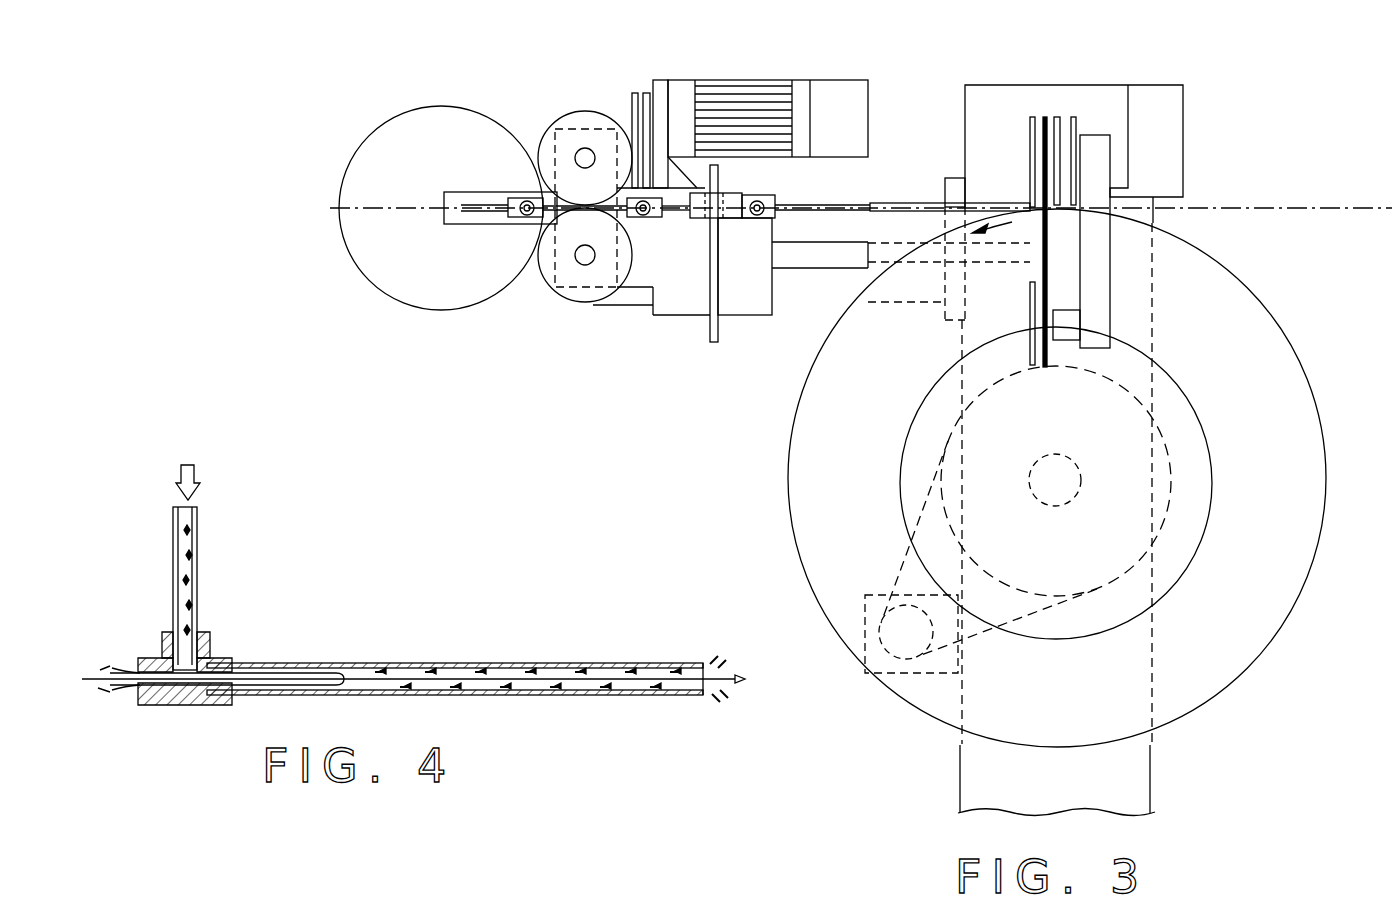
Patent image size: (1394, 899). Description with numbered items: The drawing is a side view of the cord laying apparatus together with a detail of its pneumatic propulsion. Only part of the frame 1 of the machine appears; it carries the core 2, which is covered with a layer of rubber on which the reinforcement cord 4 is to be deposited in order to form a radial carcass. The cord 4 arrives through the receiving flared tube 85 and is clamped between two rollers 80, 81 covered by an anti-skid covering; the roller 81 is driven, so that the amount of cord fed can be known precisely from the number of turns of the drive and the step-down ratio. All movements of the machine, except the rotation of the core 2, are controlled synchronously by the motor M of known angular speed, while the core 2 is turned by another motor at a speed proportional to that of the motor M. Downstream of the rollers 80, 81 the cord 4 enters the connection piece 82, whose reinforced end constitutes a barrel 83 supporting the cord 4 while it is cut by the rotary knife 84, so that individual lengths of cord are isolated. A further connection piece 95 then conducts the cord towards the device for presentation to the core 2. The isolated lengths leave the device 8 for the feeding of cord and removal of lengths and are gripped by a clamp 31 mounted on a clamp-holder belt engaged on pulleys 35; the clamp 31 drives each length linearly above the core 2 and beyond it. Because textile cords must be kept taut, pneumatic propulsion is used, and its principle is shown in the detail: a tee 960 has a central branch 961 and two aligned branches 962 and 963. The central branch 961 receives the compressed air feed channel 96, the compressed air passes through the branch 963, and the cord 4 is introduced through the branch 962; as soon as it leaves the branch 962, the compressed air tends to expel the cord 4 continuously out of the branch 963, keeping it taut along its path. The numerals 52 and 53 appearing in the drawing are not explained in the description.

In FIG. 3, the frame 1 is at (661, 87).
In FIG. 3, the core 2 is at (1318, 581).
In FIG. 4, the reinforcement cord 4 is at (90, 677).
In FIG. 3, the device for the feeding of cord and removal of lengths 8 is at (470, 362).
In FIG. 3, the clamp 31 is at (1048, 207).
In FIG. 3, the pulley 35 is at (1077, 125).
In FIG. 3, the guide wheel 52 is at (1025, 128).
In FIG. 3, the belt drive 53 is at (1030, 342).
In FIG. 3, the unwinding roller 80 is at (566, 120).
In FIG. 3, the driven unwinding roller 81 is at (575, 296).
In FIG. 3, the connection piece 82 is at (678, 216).
In FIG. 3, the barrel 83 is at (700, 218).
In FIG. 3, the rotary knife 84 is at (735, 182).
In FIG. 3, the receiving flared tube 85 is at (403, 290).
In FIG. 3, the connection piece 95 is at (858, 205).
In FIG. 4, the compressed air feed channel 96 is at (198, 557).
In FIG. 4, the tee 960 is at (175, 707).
In FIG. 4, the central branch 961 is at (172, 633).
In FIG. 4, the aligned branch 962 is at (125, 670).
In FIG. 4, the aligned branch 963 is at (370, 665).
In FIG. 3, the motor M is at (733, 88).